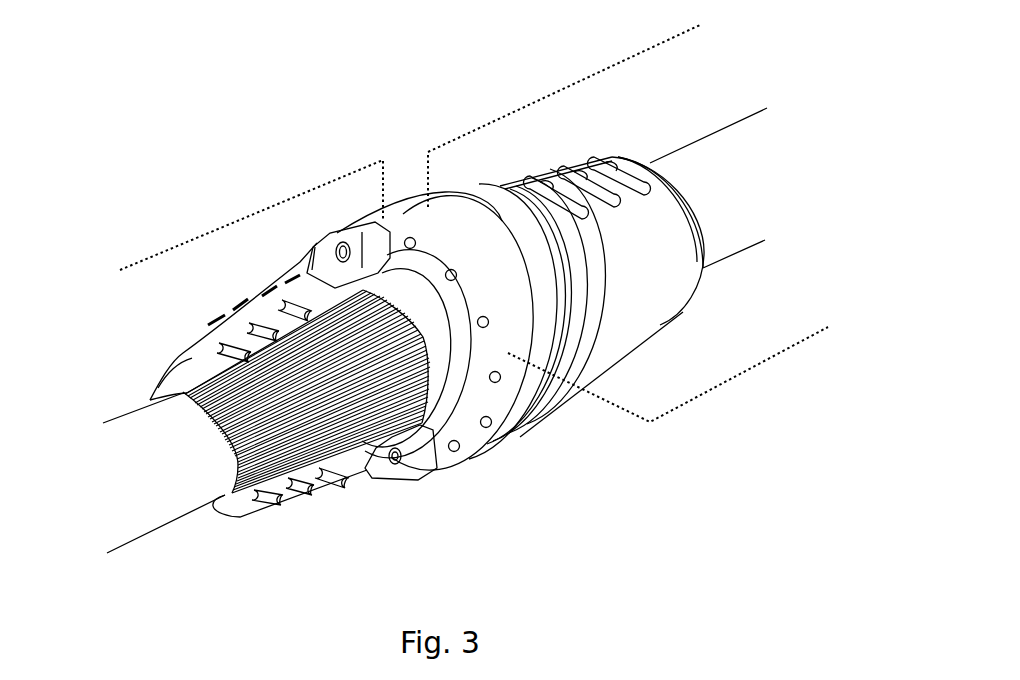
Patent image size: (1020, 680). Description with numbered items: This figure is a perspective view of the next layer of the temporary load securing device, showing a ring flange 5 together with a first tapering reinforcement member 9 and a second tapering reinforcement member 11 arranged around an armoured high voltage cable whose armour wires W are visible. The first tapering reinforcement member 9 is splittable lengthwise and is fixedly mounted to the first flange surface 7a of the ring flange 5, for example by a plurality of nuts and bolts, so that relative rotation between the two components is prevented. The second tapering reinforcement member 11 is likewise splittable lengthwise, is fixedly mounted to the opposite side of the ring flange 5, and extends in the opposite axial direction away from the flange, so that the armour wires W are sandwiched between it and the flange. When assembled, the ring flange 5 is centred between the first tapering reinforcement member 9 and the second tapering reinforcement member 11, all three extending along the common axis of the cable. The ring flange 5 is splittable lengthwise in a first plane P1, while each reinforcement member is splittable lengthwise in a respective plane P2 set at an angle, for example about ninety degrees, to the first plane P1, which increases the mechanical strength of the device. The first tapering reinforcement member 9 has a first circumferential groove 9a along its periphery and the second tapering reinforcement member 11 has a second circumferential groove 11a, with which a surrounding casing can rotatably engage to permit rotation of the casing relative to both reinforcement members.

The ring flange 5 is at (397, 212).
The first flange surface 7a is at (498, 402).
The first tapering reinforcement member 9 is at (213, 305).
The first circumferential groove 9a is at (316, 274).
The second tapering reinforcement member 11 is at (581, 156).
The second circumferential groove 11a is at (517, 237).
The armour wires W is at (280, 453).
The first plane P1 is at (745, 352).
The plane P2 is at (328, 183).